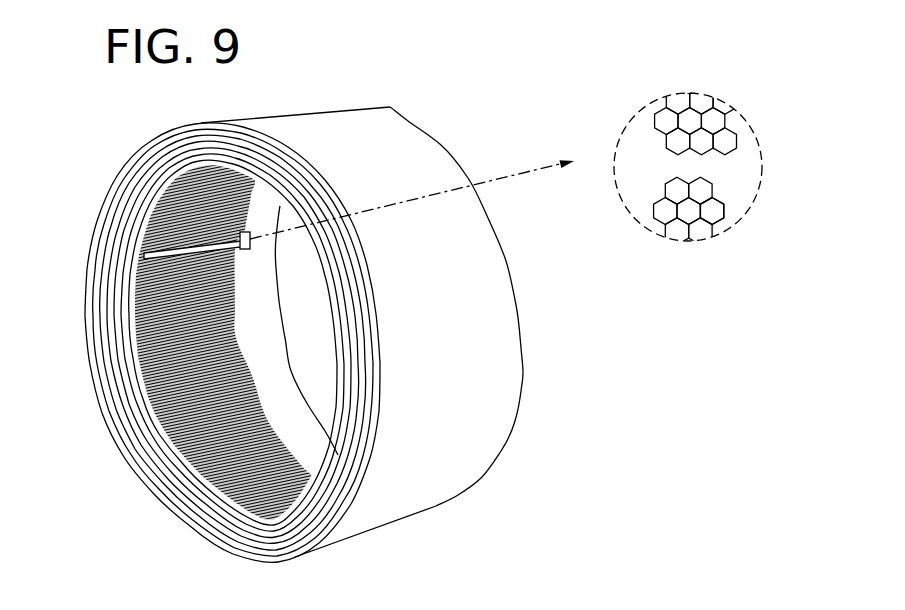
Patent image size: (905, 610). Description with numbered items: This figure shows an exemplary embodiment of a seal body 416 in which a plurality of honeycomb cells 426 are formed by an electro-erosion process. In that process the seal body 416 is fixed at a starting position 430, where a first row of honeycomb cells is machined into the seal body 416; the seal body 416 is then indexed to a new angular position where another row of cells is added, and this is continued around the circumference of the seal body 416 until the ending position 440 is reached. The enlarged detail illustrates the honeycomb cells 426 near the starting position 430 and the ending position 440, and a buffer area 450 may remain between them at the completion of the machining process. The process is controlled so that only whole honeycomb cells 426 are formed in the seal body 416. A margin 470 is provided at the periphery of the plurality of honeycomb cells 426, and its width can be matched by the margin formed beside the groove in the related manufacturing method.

The seal body 416 is at (485, 424).
The margin 470 is at (137, 381).
The buffer area 450 is at (136, 248).
The ending position 440 is at (648, 140).
The starting position 430 is at (653, 170).
The honeycomb cells 426 is at (710, 203).